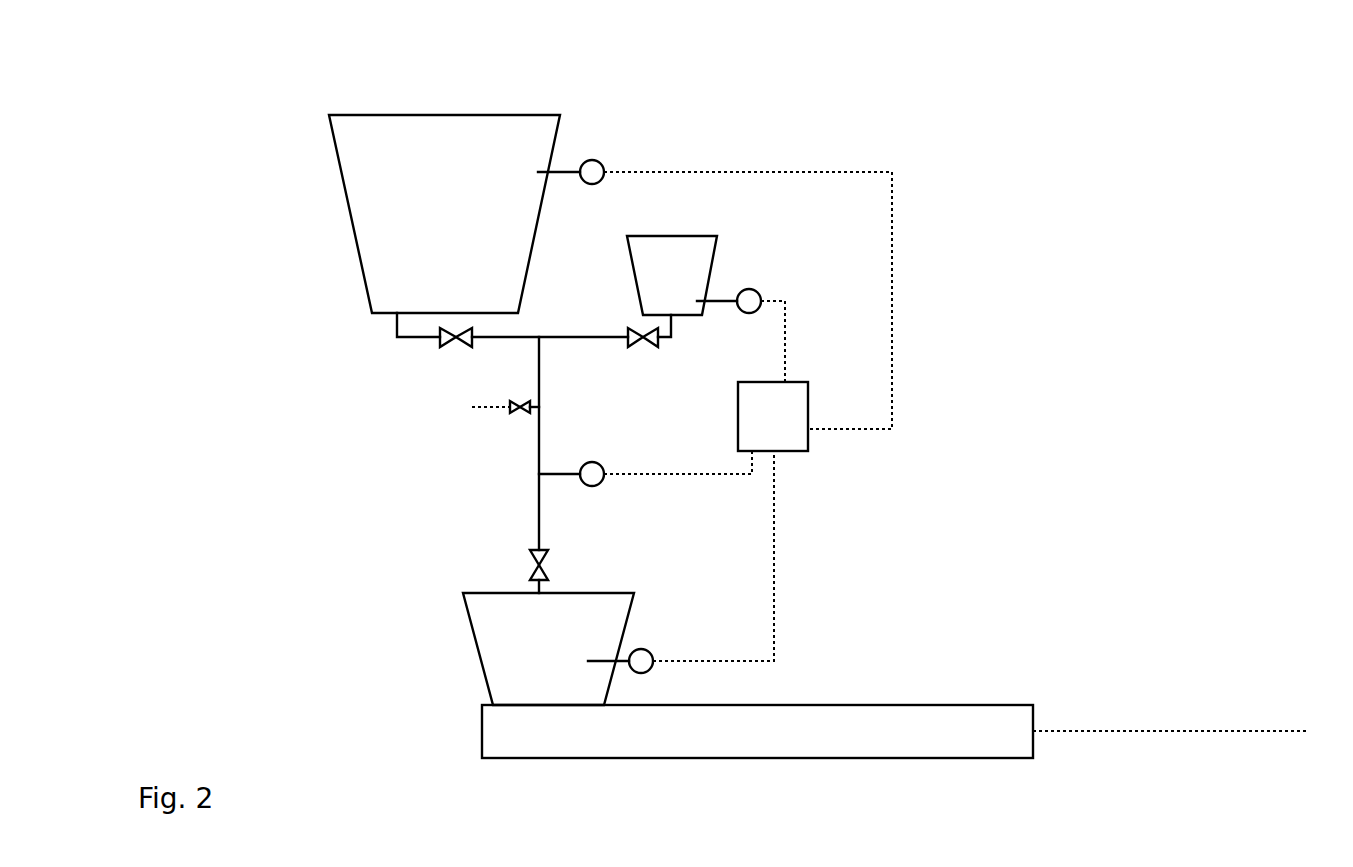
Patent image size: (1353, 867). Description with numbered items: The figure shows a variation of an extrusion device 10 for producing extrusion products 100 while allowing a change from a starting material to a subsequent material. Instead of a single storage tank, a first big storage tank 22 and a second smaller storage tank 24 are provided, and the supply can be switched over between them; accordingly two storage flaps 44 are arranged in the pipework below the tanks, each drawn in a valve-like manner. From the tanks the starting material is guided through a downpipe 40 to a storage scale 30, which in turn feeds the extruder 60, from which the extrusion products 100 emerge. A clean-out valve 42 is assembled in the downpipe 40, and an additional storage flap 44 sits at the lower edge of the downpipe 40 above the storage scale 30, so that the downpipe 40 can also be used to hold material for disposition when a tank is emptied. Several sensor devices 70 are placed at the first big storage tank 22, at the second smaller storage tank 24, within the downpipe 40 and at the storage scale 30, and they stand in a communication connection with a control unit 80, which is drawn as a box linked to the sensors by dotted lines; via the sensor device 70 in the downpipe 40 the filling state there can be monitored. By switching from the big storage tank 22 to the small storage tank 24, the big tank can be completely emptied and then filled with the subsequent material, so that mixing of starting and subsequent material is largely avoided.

The extrusion device 10 is at (468, 57).
The first big storage tank 22 is at (353, 201).
The second smaller storage tank 24 is at (711, 250).
The storage scale 30 is at (484, 627).
The downpipe 40 is at (539, 445).
The clean-out valve 42 is at (511, 412).
The storage flap 44 is at (470, 334).
The extruder 60 is at (883, 713).
The sensor device 70 is at (592, 160).
The control unit 80 is at (808, 412).
The extrusion product 100 is at (1166, 731).